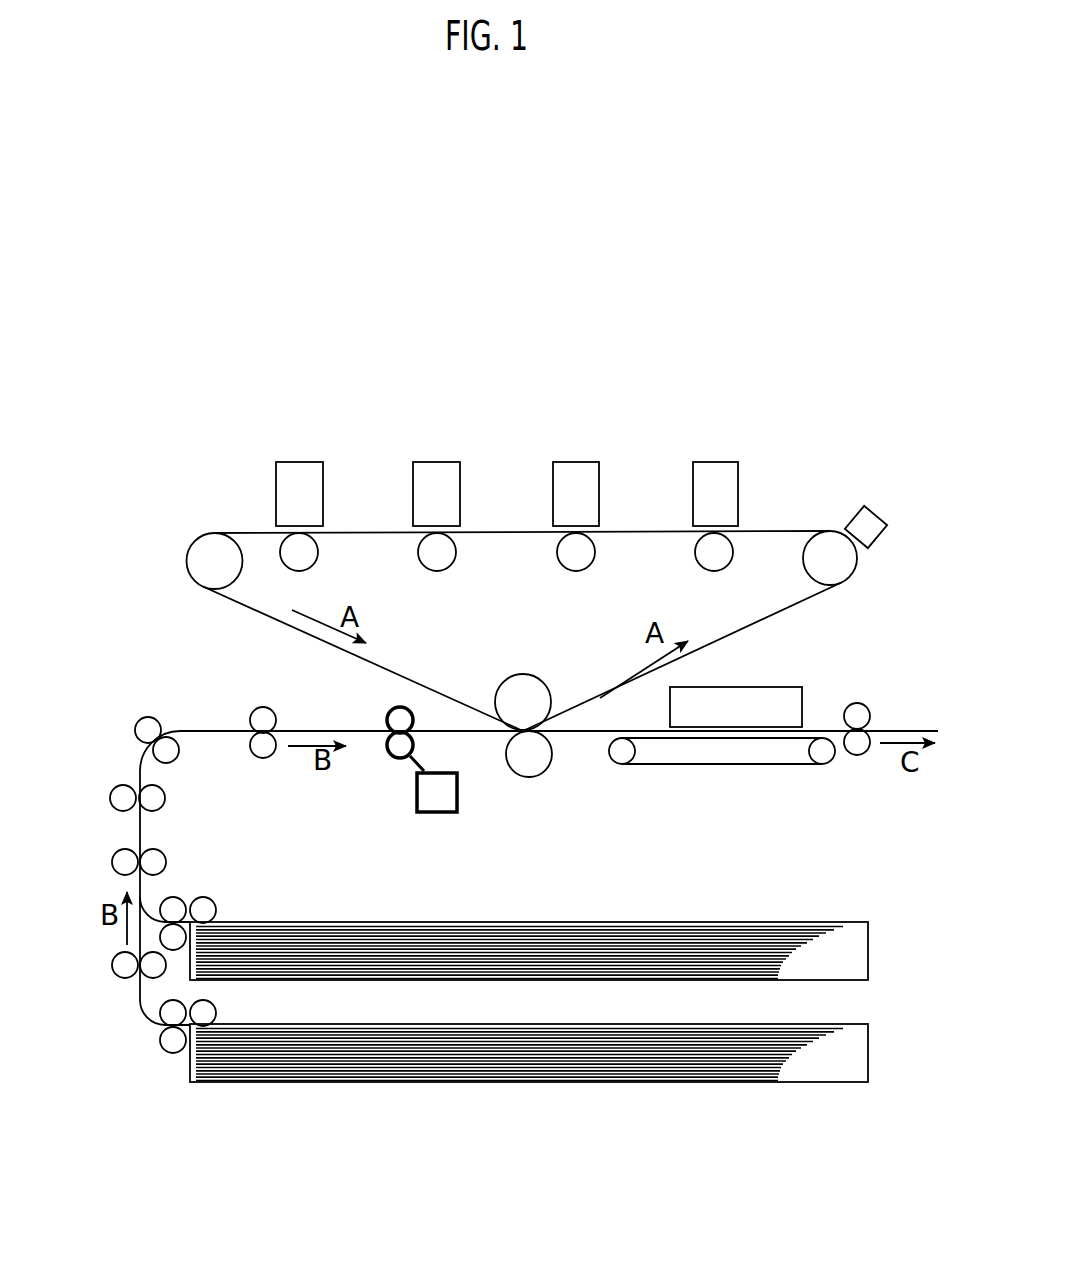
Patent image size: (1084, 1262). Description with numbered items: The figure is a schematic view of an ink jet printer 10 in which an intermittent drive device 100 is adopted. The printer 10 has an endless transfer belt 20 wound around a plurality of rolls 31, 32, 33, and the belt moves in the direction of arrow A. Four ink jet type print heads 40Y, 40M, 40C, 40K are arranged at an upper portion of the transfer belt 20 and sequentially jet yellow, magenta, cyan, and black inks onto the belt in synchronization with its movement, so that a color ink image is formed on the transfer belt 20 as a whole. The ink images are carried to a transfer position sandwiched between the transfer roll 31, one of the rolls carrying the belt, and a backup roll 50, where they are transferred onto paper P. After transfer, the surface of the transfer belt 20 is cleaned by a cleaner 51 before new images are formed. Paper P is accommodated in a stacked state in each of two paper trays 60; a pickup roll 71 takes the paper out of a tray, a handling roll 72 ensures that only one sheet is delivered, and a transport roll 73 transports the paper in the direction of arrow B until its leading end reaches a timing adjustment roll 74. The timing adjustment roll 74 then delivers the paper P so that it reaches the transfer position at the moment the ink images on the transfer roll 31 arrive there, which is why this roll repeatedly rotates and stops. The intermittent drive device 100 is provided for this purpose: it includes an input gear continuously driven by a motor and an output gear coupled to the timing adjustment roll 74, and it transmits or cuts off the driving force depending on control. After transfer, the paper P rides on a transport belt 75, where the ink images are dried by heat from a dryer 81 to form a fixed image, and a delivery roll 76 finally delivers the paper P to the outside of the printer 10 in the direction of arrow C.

The ink jet printer 10 is at (644, 356).
The transfer belt 20 is at (793, 607).
The transfer roll 31 is at (525, 675).
The roll 32 is at (807, 572).
The roll 33 is at (235, 572).
The print head 40K is at (292, 462).
The print head 40C is at (432, 462).
The print head 40M is at (572, 462).
The print head 40Y is at (710, 462).
The backup roll 50 is at (535, 776).
The cleaner 51 is at (872, 507).
The paper tray 60 is at (552, 979).
The pickup roll 71 is at (216, 910).
The handling roll 72 is at (165, 915).
The transport roll 73 is at (245, 740).
The timing adjustment roll 74 is at (383, 737).
The transport belt 75 is at (739, 774).
The delivery roll 76 is at (870, 729).
The dryer 81 is at (748, 687).
The intermittent drive device 100 is at (447, 800).
The paper P is at (483, 923).